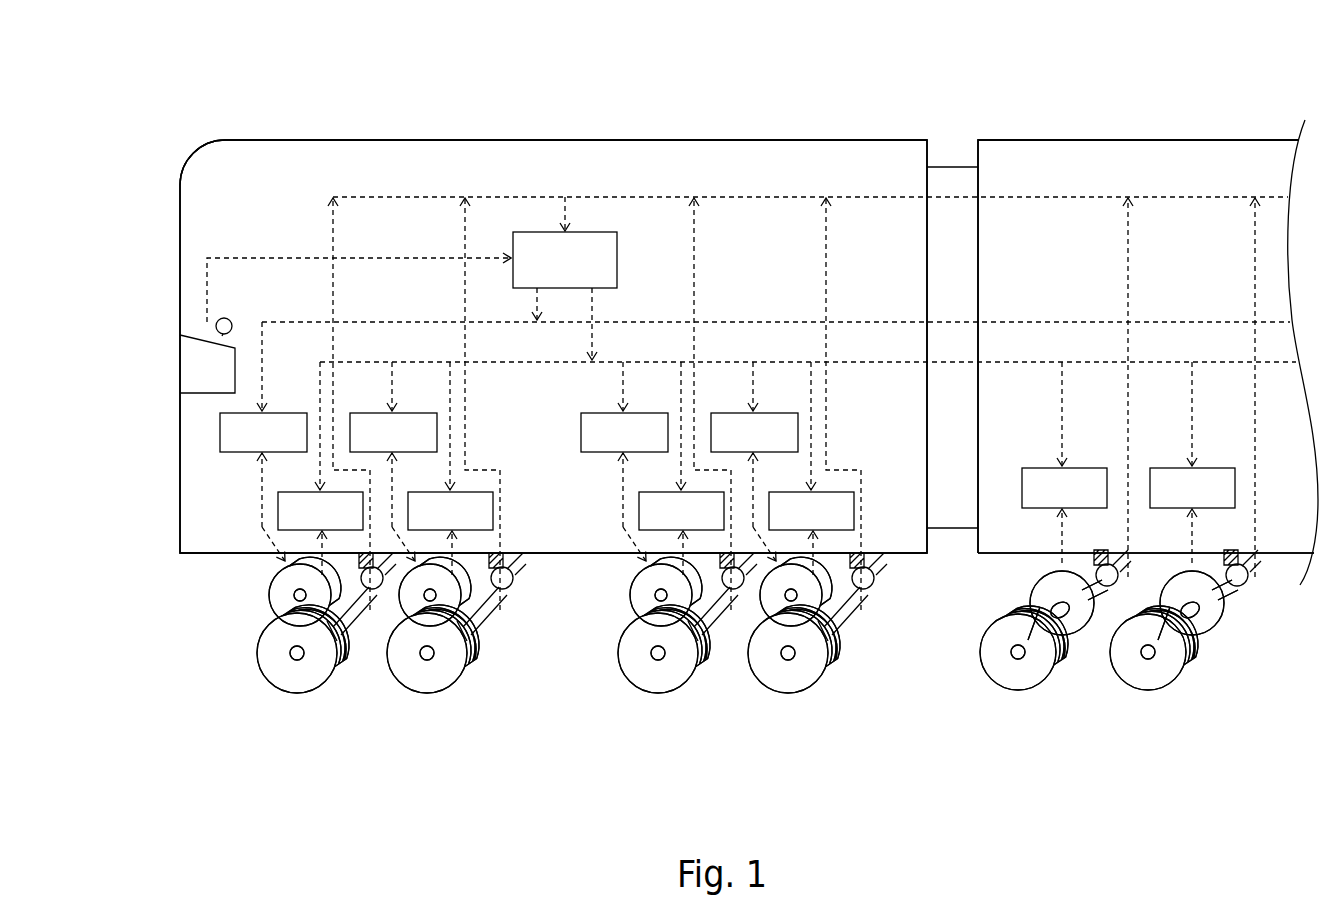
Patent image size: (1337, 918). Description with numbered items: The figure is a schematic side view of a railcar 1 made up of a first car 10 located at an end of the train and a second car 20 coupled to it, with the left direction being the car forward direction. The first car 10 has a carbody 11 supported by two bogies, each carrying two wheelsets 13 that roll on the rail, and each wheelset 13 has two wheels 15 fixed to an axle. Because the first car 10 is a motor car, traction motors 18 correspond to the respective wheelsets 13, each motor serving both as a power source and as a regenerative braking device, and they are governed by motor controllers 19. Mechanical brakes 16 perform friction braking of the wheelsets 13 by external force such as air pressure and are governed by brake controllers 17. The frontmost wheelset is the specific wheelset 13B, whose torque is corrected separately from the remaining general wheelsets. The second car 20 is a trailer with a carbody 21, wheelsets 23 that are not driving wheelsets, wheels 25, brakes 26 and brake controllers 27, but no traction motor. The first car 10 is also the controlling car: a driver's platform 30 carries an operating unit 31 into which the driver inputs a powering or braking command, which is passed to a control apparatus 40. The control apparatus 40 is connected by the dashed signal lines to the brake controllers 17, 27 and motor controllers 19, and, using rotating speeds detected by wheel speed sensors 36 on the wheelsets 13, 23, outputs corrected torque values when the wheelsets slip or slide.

The railcar 1 is at (166, 124).
The first car 10 is at (553, 142).
The carbody 11 is at (278, 152).
The wheelset 13 is at (594, 680).
The specific wheelset 13B is at (358, 640).
The wheel 15 is at (292, 672).
The brake 16 is at (352, 655).
The brake controller 17 is at (305, 490).
The traction motor 18 is at (327, 678).
The motor controller 19 is at (282, 411).
The second car 20 is at (1140, 142).
The carbody 21 is at (1019, 163).
The wheelset 23 is at (1031, 660).
The wheel 25 is at (1010, 672).
The brake 26 is at (1080, 637).
The brake controller 27 is at (1086, 466).
The driver's platform 30 is at (202, 395).
The operating unit 31 is at (359, 290).
The wheel speed sensor 36 is at (375, 591).
The control apparatus 40 is at (620, 254).